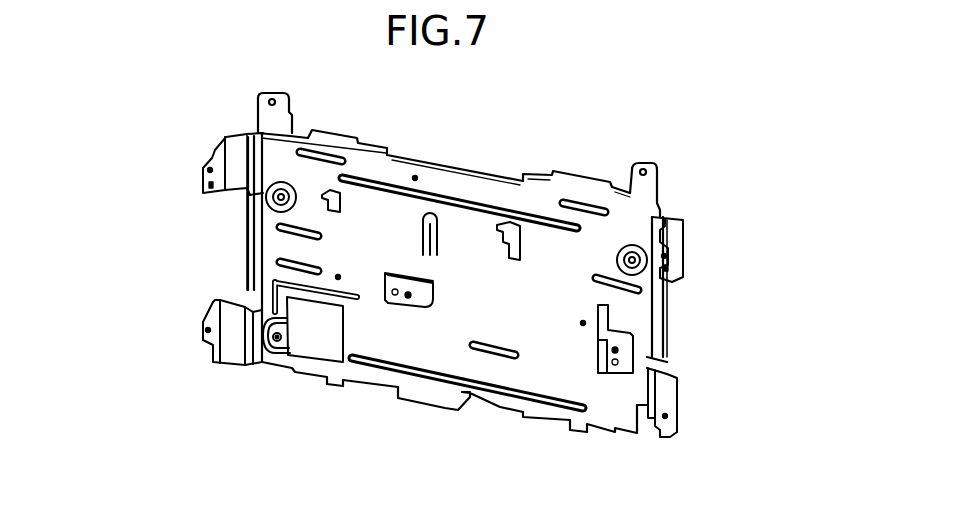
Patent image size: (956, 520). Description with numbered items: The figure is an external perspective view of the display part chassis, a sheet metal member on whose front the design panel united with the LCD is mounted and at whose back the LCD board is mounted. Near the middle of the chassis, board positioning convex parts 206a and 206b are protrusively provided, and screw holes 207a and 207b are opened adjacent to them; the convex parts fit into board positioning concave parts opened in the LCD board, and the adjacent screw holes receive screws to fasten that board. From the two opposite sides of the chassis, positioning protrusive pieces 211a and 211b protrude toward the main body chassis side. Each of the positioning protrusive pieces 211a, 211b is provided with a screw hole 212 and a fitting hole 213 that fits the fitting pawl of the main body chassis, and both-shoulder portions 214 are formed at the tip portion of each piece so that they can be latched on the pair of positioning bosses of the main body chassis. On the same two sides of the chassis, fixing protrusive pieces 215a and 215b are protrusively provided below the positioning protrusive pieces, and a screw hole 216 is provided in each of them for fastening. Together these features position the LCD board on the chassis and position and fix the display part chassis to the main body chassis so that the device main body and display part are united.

The board positioning convex part 206a is at (408, 297).
The board positioning convex part 206b is at (618, 350).
The screw hole 207a is at (396, 294).
The screw hole 207b is at (618, 362).
The positioning protrusive piece 211a is at (680, 273).
The positioning protrusive piece 211b is at (220, 195).
The screw hole 212 is at (207, 168).
The fitting hole 213 is at (208, 186).
The both-shoulder portions 214 is at (213, 152).
The fixing protrusive piece 215a is at (673, 433).
The fixing protrusive piece 215b is at (213, 363).
The screw hole 216 is at (206, 330).